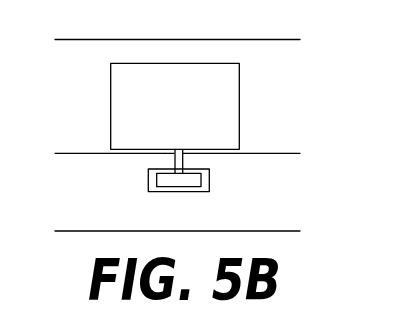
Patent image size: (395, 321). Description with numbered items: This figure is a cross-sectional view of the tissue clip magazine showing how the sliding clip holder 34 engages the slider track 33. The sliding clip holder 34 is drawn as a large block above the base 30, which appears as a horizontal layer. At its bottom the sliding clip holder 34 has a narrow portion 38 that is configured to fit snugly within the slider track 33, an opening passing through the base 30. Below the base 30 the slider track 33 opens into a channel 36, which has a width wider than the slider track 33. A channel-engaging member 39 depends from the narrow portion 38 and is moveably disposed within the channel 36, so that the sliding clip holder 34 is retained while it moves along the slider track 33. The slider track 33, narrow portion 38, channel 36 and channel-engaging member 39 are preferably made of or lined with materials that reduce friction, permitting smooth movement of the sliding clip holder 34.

The base 30 is at (264, 152).
The slider track 33 is at (172, 157).
The sliding clip holder 34 is at (217, 87).
The channel 36 is at (207, 177).
The narrow portion 38 is at (178, 149).
The channel-engaging member 39 is at (182, 180).